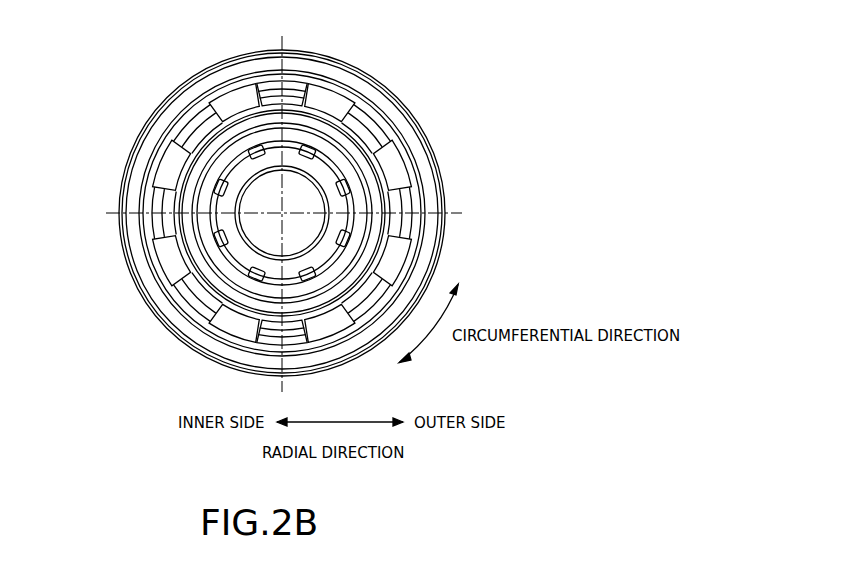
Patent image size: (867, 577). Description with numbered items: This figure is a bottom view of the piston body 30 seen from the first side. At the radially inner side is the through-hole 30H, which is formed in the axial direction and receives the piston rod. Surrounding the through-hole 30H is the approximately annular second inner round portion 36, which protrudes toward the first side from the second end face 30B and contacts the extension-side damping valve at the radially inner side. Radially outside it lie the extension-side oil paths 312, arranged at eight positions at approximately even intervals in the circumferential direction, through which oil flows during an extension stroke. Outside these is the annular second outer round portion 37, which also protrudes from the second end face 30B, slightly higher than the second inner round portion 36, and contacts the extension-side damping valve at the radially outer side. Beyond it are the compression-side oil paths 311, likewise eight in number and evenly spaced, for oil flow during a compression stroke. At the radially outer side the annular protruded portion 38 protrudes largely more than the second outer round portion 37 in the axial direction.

The piston body 30 is at (135, 88).
The second end face 30B is at (163, 222).
The through-hole 30H is at (310, 226).
The second inner round portion 36 is at (322, 178).
The second outer round portion 37 is at (368, 174).
The annular protruded portion 38 is at (140, 158).
The compression-side oil paths 311 is at (331, 101).
The extension-side oil paths 312 is at (215, 238).